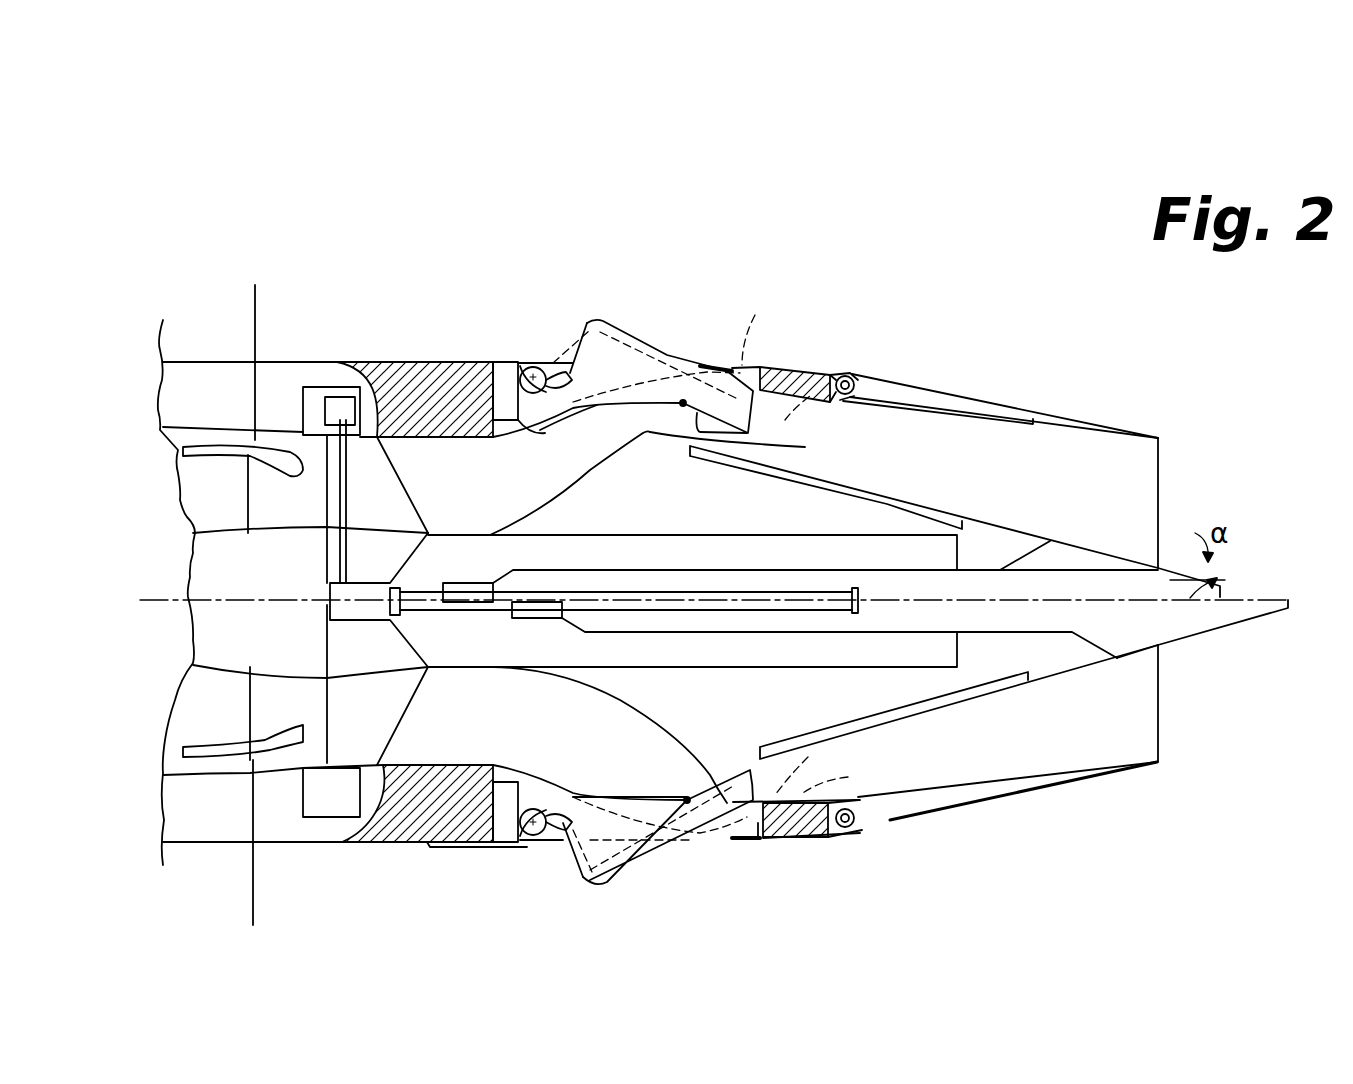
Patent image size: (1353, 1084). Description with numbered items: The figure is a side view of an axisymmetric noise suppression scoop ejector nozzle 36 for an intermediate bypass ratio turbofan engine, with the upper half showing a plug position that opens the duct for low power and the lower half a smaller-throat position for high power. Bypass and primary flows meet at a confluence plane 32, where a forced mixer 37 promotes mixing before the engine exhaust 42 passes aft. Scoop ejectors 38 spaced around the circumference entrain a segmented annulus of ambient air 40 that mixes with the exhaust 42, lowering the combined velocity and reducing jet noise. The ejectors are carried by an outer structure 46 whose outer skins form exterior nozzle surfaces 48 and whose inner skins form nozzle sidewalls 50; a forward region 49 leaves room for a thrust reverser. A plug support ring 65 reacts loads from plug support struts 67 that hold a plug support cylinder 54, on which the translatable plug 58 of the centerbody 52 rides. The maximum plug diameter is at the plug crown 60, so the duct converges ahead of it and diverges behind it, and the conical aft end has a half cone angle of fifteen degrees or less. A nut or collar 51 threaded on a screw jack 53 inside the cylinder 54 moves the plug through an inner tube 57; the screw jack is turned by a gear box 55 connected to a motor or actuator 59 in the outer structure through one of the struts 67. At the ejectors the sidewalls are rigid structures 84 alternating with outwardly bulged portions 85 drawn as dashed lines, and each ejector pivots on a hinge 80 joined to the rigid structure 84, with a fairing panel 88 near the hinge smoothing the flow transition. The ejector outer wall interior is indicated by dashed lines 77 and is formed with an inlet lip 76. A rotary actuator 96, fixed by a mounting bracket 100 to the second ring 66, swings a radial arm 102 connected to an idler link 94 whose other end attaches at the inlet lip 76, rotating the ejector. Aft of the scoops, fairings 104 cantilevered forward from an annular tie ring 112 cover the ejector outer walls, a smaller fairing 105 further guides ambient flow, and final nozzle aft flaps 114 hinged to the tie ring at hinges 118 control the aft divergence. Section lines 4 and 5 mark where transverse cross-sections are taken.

The confluence plane 32 is at (254, 905).
The scoop ejector nozzle 36 is at (922, 171).
The forced mixer 37 is at (293, 462).
The scoop ejectors 38 is at (664, 202).
The ambient air 40 is at (257, 150).
The engine exhaust 42 is at (376, 483).
The outer structure 46 is at (413, 362).
The exterior nozzle surfaces 48 is at (275, 360).
The forward region 49 is at (435, 380).
The nozzle sidewalls 50 is at (417, 440).
The nut or collar 51 is at (465, 583).
The centerbody 52 is at (587, 720).
The screw jack 53 is at (780, 605).
The plug support cylinder 54 is at (590, 533).
The gear box 55 is at (347, 610).
The inner tube 57 is at (672, 575).
The translatable plug 58 is at (1003, 523).
The motor or actuator 59 is at (335, 403).
The plug crown 60 is at (623, 440).
The plug support ring 65 is at (320, 417).
The second ring 66 is at (507, 363).
The plug support struts 67 is at (367, 732).
The inlet lip 76 is at (618, 327).
The dashed lines 77 is at (790, 545).
The pivot pin or hinge 80 is at (677, 405).
The rigid structure 84 is at (590, 405).
The outwardly bulged portions 85 is at (832, 595).
The fairing panel 88 is at (790, 447).
The idler link 94 is at (573, 363).
The rotary actuator 96 is at (542, 367).
The mounting bracket 100 is at (527, 843).
The radial arm 102 is at (558, 367).
The fairings 104 is at (760, 365).
The smaller fairing 105 is at (718, 830).
The annular tie ring 112 is at (854, 378).
The final nozzle aft flaps 114 is at (1070, 420).
The hinges 118 is at (855, 385).
The section line 4- 4 is at (793, 200).
The section line 5- 5 is at (387, 698).